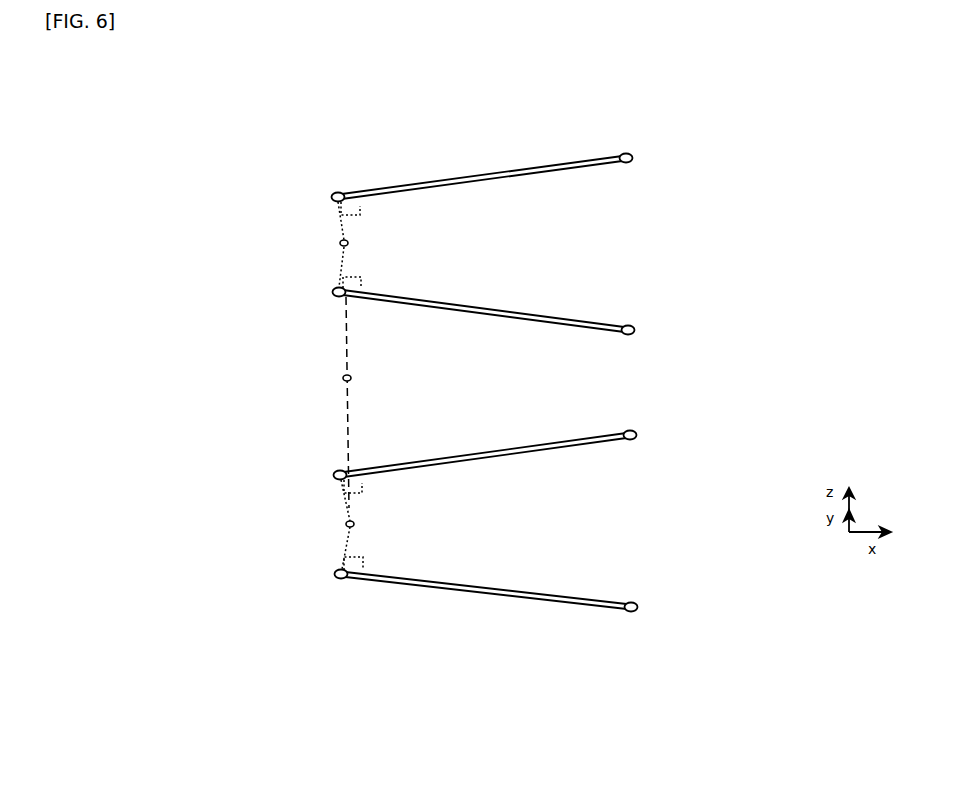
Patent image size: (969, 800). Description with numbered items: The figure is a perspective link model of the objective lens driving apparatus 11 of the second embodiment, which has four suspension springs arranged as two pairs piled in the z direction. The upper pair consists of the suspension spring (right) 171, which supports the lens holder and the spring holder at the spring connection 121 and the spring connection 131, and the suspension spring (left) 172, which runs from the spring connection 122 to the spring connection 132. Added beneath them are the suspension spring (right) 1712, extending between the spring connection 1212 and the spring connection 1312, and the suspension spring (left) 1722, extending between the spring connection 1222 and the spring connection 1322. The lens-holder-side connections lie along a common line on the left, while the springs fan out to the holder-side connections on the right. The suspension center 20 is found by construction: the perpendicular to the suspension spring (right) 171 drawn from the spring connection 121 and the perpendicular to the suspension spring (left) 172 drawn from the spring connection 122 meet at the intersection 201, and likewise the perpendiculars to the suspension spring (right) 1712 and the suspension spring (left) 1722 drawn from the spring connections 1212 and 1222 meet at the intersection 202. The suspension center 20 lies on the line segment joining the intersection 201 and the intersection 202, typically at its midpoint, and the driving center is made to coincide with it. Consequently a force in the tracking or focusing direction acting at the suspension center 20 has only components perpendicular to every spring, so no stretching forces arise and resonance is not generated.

The objective lens driving apparatus 11 is at (220, 129).
The suspension center 20 is at (352, 377).
The intersection 201 is at (349, 242).
The intersection 202 is at (355, 522).
The spring connection 121 is at (330, 197).
The spring connection 122 is at (331, 292).
The spring connection 1212 is at (334, 476).
The spring connection 1222 is at (335, 574).
The spring connection 131 is at (634, 158).
The spring connection 132 is at (636, 330).
The spring connection 1312 is at (638, 435).
The spring connection 1322 is at (639, 607).
The suspension spring (right) 171 is at (540, 172).
The suspension spring (left) 172 is at (572, 343).
The suspension spring (right) 1712 is at (543, 448).
The suspension spring (left) 1722 is at (576, 612).